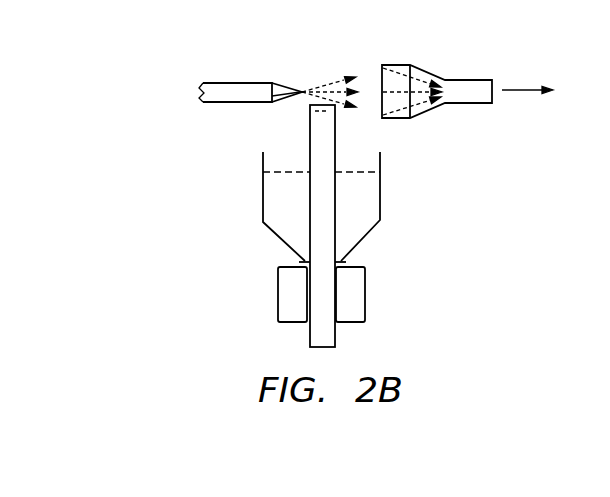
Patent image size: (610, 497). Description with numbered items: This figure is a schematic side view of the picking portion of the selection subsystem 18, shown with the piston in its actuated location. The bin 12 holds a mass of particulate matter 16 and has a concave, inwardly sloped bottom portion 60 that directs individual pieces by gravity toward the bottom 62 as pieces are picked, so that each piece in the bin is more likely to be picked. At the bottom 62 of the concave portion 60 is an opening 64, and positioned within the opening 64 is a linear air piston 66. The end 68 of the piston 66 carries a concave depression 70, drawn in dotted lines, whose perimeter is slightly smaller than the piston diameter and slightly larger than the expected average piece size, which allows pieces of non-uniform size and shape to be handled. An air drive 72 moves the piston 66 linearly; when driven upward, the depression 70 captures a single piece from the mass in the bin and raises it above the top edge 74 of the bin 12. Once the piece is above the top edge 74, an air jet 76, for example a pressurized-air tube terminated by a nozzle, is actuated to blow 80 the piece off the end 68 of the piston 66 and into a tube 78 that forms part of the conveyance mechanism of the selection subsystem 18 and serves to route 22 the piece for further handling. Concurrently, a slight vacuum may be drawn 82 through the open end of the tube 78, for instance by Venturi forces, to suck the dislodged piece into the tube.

The bin 12 is at (381, 205).
The particulate matter 16 is at (291, 171).
The selection subsystem 18 is at (497, 207).
The route 22 is at (508, 90).
The bottom portion 60 is at (400, 229).
The bottom 62 is at (341, 233).
The opening 64 is at (352, 260).
The linear air piston 66 is at (326, 141).
The end 68 is at (318, 101).
The concave depression 70 is at (308, 112).
The air drive 72 is at (358, 292).
The top edge 74 is at (381, 152).
The air jet 76 is at (278, 84).
The tube 78 is at (423, 65).
The blow 80 is at (319, 83).
The vacuum drawn 82 is at (417, 106).